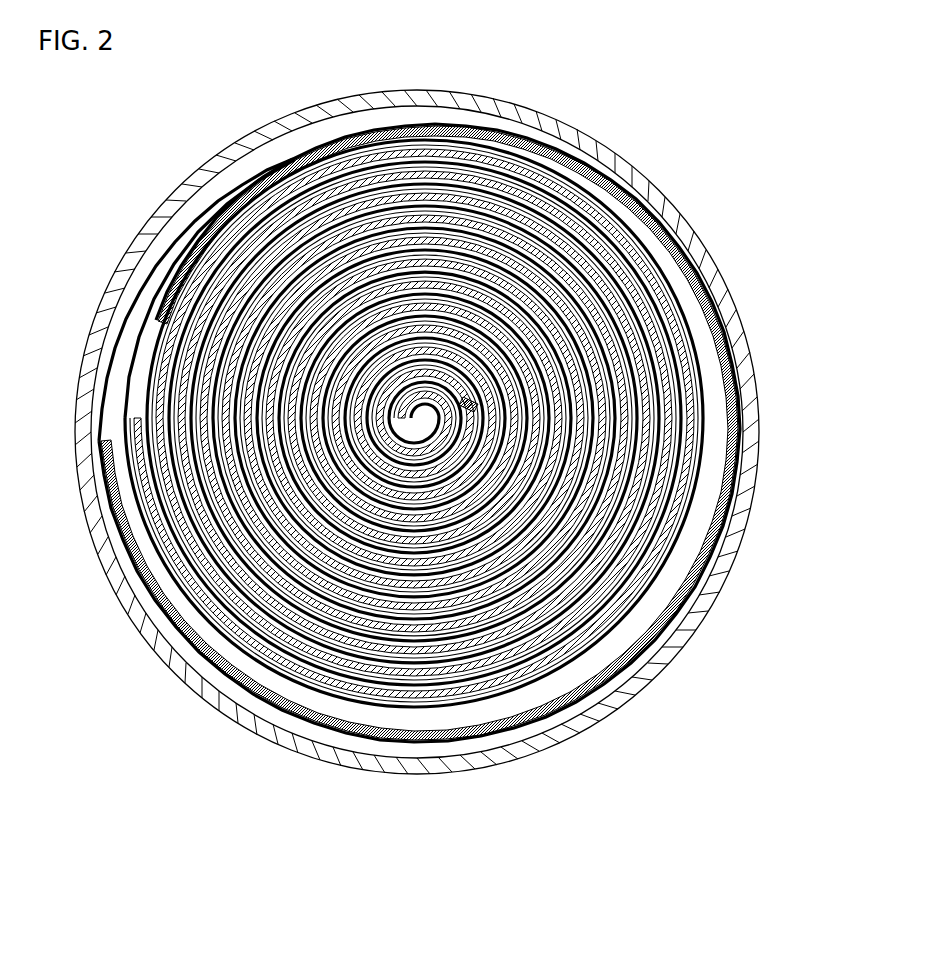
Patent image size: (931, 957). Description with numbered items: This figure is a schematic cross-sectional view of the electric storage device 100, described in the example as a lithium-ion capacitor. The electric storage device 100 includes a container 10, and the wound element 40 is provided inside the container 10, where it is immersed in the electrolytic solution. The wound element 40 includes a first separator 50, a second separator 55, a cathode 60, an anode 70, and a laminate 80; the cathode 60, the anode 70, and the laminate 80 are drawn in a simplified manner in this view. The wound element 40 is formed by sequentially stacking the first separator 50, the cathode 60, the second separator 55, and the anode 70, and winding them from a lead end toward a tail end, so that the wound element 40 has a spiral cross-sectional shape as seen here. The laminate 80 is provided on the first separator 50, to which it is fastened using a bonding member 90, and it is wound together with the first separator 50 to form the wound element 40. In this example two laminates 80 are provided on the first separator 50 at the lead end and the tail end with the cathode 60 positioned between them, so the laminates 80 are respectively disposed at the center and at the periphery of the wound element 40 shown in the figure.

The electric storage device 100 is at (722, 112).
The container 10 is at (583, 152).
The wound element 40 is at (111, 190).
The first separator 50 is at (470, 470).
The second separator 55 is at (432, 460).
The cathode 60 is at (490, 392).
The anode 70 is at (452, 370).
The laminate 80 is at (276, 700).
The bonding member 90 is at (472, 400).